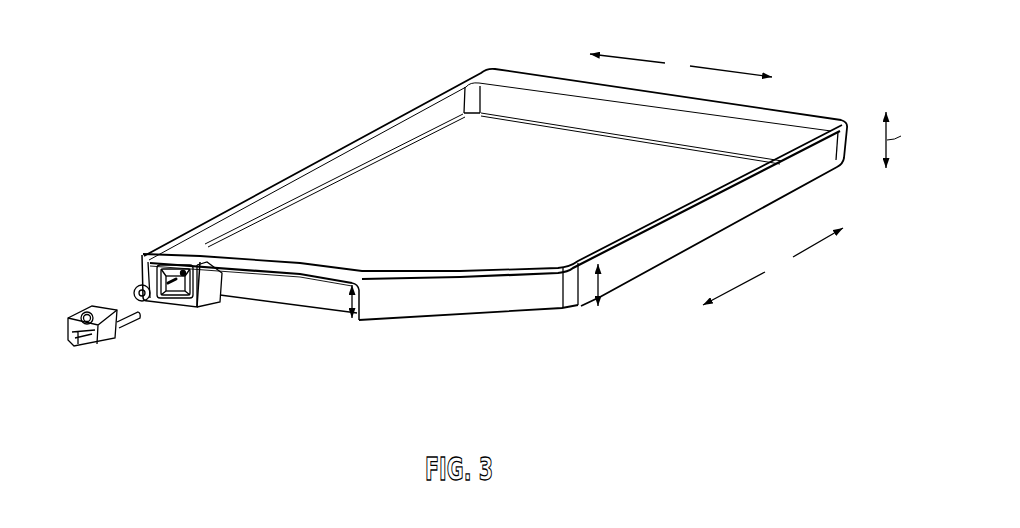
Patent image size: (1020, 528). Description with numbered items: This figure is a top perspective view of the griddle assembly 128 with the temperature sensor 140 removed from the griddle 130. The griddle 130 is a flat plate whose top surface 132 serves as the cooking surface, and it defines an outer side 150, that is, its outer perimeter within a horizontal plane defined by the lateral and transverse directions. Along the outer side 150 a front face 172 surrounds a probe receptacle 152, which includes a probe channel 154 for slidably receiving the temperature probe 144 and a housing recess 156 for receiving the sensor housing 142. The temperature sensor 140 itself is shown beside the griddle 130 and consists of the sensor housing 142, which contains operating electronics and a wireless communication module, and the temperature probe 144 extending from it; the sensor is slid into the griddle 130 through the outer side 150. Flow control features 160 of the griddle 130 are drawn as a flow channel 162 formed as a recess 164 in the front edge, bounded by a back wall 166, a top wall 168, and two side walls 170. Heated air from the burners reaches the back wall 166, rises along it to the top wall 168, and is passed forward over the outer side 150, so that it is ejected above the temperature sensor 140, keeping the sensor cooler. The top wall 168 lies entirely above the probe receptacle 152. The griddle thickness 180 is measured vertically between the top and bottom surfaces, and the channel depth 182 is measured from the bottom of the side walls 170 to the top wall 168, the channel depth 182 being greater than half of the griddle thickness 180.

The griddle assembly 128 is at (503, 219).
The griddle 130 is at (387, 127).
The top surface 132 is at (518, 138).
The temperature sensor 140 is at (100, 350).
The sensor housing 142 is at (93, 306).
The temperature probe 144 is at (131, 324).
The outer side 150 is at (399, 303).
The probe receptacle 152 is at (172, 277).
The probe channel 154 is at (173, 264).
The housing recess 156 is at (178, 300).
The flow control features 160 is at (306, 320).
The flow channel 162 is at (340, 291).
The recess 164 is at (289, 288).
The back wall 166 is at (329, 302).
The top wall 168 is at (274, 277).
The side walls 170 is at (217, 280).
The front face 172 is at (204, 288).
The griddle thickness 180 is at (599, 285).
The channel depth 182 is at (366, 283).